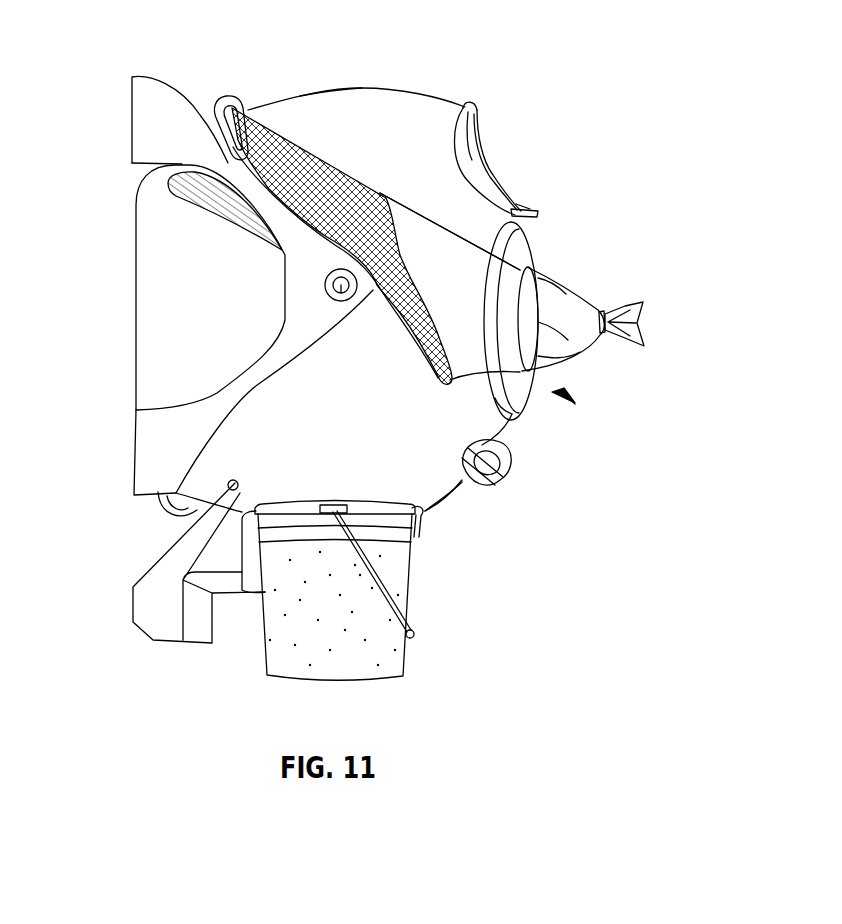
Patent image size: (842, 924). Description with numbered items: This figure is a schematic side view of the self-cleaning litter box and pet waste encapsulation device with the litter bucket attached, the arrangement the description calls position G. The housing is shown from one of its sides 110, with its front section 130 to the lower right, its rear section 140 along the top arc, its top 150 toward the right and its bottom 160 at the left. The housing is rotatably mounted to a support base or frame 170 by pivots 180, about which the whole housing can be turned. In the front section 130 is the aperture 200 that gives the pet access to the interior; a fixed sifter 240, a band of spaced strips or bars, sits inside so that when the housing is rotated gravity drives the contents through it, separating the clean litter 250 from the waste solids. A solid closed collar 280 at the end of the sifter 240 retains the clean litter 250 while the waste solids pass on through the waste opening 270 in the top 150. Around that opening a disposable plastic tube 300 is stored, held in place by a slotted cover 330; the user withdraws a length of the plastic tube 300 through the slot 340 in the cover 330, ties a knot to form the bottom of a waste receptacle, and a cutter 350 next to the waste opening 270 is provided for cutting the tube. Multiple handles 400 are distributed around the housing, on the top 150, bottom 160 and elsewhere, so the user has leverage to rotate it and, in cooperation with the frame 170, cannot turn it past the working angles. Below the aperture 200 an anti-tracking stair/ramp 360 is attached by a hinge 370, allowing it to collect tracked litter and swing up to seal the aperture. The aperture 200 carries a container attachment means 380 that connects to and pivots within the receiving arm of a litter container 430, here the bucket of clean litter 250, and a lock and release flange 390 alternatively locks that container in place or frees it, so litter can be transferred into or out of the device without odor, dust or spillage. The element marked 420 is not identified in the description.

The side 110 is at (378, 418).
The front section 130 is at (460, 503).
The rear section 140 is at (361, 88).
The top 150 is at (572, 402).
The bottom 160 is at (136, 305).
The support base or frame 170 is at (334, 331).
The pivots 180 is at (341, 293).
The aperture 200 is at (378, 502).
The sifter 240 is at (312, 170).
The clean litter 250 is at (270, 652).
The waste opening 270 is at (577, 289).
The solid closed collar 280 is at (412, 235).
The plastic tube 300 is at (563, 347).
The slotted cover 330 is at (517, 402).
The slot 340 is at (540, 270).
The cutter 350 is at (537, 212).
The anti-tracking stair/ramp 360 is at (150, 618).
The hinge 370 is at (234, 480).
The container attachment means 380 is at (295, 500).
The lock and release flange 390 is at (420, 530).
The handles 400 is at (236, 98).
The strap 420 is at (473, 160).
The litter container 430 is at (405, 652).